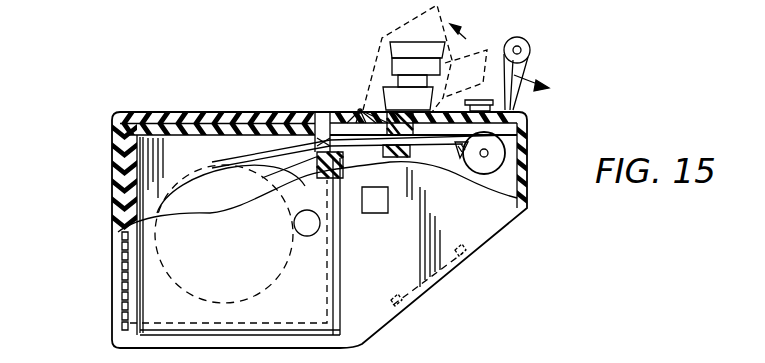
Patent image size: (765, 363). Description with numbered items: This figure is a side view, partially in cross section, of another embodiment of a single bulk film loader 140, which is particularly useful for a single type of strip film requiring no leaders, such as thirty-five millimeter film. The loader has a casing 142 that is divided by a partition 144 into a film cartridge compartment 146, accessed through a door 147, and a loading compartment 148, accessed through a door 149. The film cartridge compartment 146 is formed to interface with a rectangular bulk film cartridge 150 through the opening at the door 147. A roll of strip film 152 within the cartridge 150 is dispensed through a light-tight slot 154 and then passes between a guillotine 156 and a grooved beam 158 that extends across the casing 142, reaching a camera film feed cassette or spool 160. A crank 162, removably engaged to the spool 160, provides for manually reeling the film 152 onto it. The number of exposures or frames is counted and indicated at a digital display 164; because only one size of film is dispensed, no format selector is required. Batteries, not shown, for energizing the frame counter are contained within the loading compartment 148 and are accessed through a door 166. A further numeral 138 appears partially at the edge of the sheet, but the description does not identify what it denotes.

The printer base 138 is at (534, 358).
The single bulk film loader 140 is at (106, 153).
The casing 142 is at (162, 110).
The partition 144 is at (330, 165).
The film cartridge compartment 146 is at (199, 128).
The door 147 is at (140, 253).
The loading compartment 148 is at (505, 180).
The door 149 is at (447, 110).
The bulk film cartridge 150 is at (122, 208).
The strip film 152 is at (268, 154).
The light-tight slot 154 is at (326, 145).
The guillotine 156 is at (385, 92).
The grooved beam 158 is at (420, 150).
The camera film feed cassette or spool 160 is at (500, 142).
The crank 162 is at (522, 65).
The digital display 164 is at (375, 203).
The door 166 is at (443, 272).